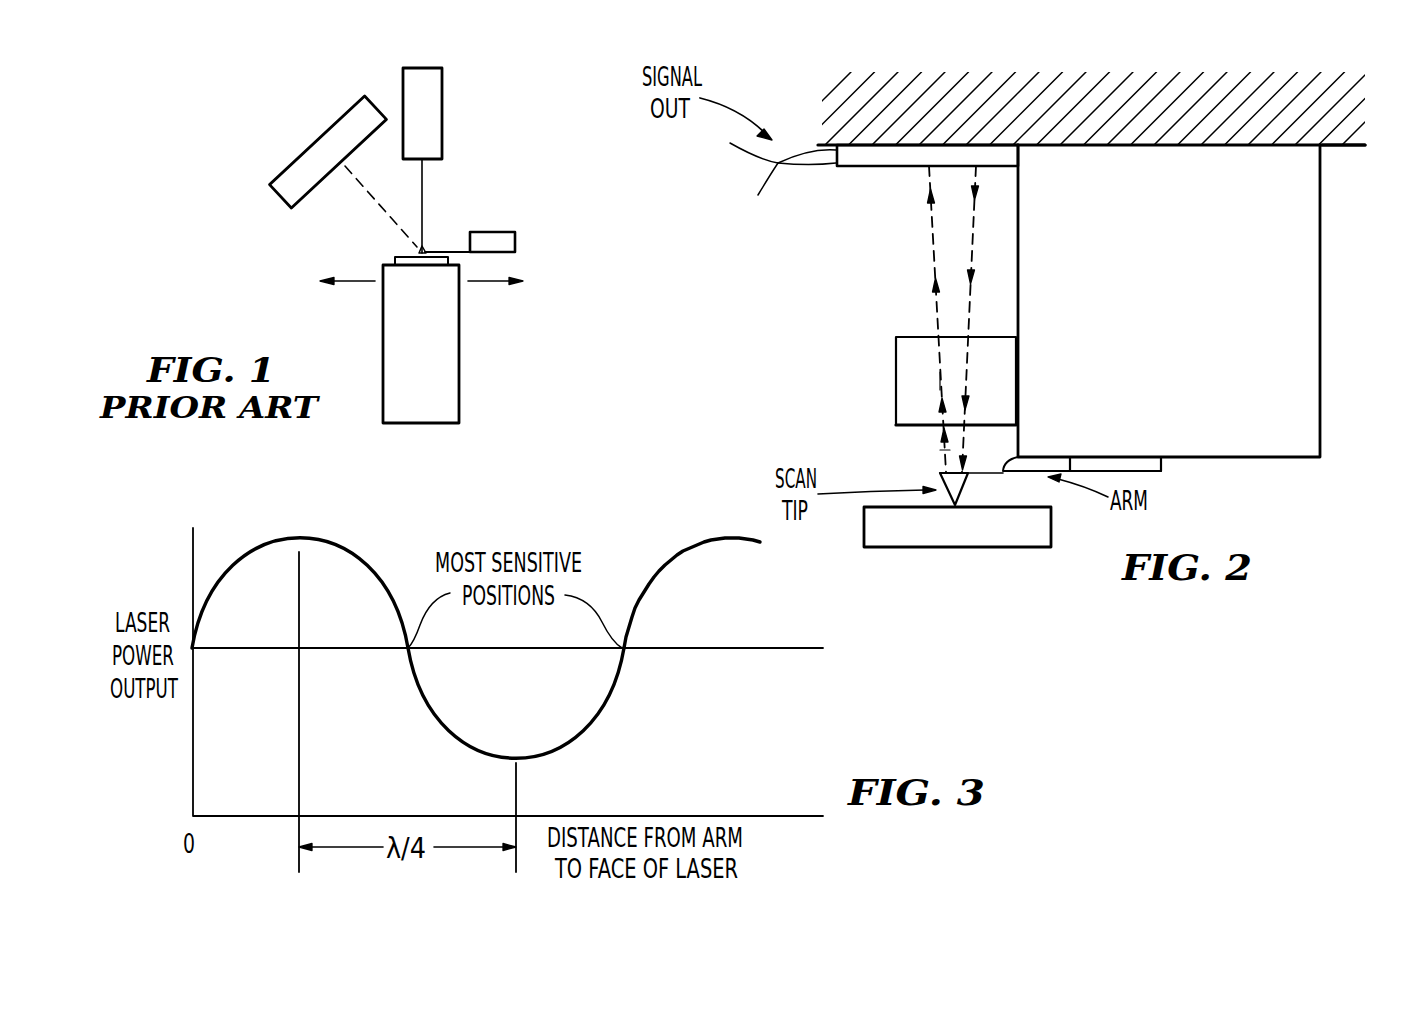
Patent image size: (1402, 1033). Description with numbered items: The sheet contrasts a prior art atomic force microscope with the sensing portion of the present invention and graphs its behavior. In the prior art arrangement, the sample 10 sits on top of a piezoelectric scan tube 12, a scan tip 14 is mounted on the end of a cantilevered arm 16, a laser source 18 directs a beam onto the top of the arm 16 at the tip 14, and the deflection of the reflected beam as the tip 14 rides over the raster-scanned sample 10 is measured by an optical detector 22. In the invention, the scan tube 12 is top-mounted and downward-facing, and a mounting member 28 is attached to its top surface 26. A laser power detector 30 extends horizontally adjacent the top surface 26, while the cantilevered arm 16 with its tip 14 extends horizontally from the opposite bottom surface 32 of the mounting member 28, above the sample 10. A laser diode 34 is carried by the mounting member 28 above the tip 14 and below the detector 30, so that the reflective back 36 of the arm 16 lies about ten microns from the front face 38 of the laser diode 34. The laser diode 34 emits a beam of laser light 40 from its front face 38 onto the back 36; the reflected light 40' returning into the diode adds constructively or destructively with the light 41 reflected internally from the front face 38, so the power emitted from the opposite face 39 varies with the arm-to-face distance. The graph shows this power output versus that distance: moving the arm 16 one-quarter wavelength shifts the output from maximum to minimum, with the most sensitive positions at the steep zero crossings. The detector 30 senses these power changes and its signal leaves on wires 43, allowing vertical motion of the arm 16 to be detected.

In FIG. 1, the sample 10 is at (398, 257).
In FIG. 2, the sample 10 is at (868, 532).
In FIG. 1, the piezoelectric scan tube 12 is at (390, 355).
In FIG. 2, the piezoelectric scan tube 12 is at (825, 95).
In FIG. 1, the scan tip 14 is at (425, 252).
In FIG. 2, the scan tip 14 is at (966, 492).
In FIG. 1, the cantilevered arm 16 is at (460, 254).
In FIG. 2, the cantilevered arm 16 is at (1018, 456).
In FIG. 1, the laser source 18 is at (442, 92).
In FIG. 1, the optical detector 22 is at (330, 141).
In FIG. 2, the top surface 26 is at (1337, 148).
In FIG. 2, the mounting member 28 is at (1281, 440).
In FIG. 2, the laser power detector 30 is at (879, 168).
In FIG. 2, the bottom surface 32 is at (1215, 458).
In FIG. 2, the laser diode 34 is at (898, 353).
In FIG. 2, the back of the arm 36 is at (940, 473).
In FIG. 2, the front face of the laser diode 38 is at (897, 430).
In FIG. 2, the opposite face of the laser diode 39 is at (913, 337).
In FIG. 2, the beam of laser light 40 is at (944, 319).
In FIG. 2, the reflected light 40' is at (916, 453).
In FIG. 2, the internally reflected light 41 is at (945, 380).
In FIG. 2, the wires 43 is at (773, 173).